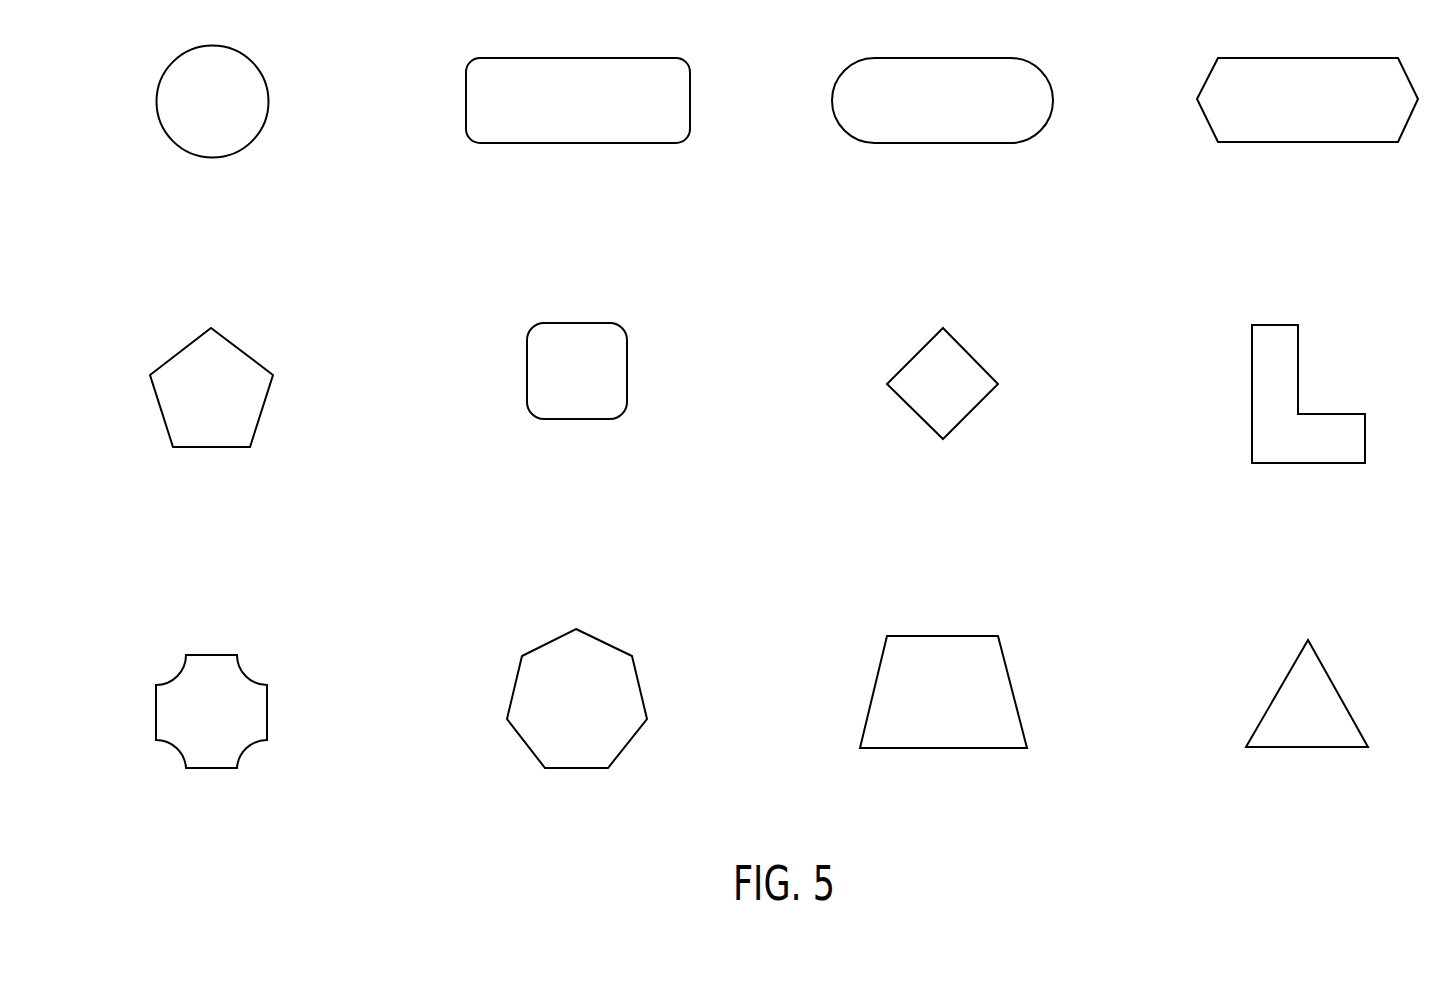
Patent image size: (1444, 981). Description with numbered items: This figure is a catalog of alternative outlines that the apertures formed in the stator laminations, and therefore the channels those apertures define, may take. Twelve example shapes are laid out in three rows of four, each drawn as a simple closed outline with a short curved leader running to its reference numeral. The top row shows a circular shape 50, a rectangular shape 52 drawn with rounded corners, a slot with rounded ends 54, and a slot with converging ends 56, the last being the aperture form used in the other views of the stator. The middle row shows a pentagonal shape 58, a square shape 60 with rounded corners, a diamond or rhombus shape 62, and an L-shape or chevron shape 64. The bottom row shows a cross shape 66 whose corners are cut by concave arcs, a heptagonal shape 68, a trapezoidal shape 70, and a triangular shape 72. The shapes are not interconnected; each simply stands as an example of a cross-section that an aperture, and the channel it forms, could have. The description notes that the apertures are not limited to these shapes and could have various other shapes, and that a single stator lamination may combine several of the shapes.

The circular shape 50 is at (247, 145).
The rectangular shape 52 is at (578, 143).
The slot with rounded ends 54 is at (943, 143).
The slot with converging ends 56 is at (1315, 142).
The pentagonal shape 58 is at (210, 447).
The square shape 60 is at (573, 419).
The diamond or rhombus shape 62 is at (967, 417).
The L-shape or chevron shape 64 is at (1310, 463).
The cross shape 66 is at (247, 747).
The heptagonal shape 68 is at (623, 748).
The trapezoidal shape 70 is at (979, 748).
The triangular shape 72 is at (1311, 747).